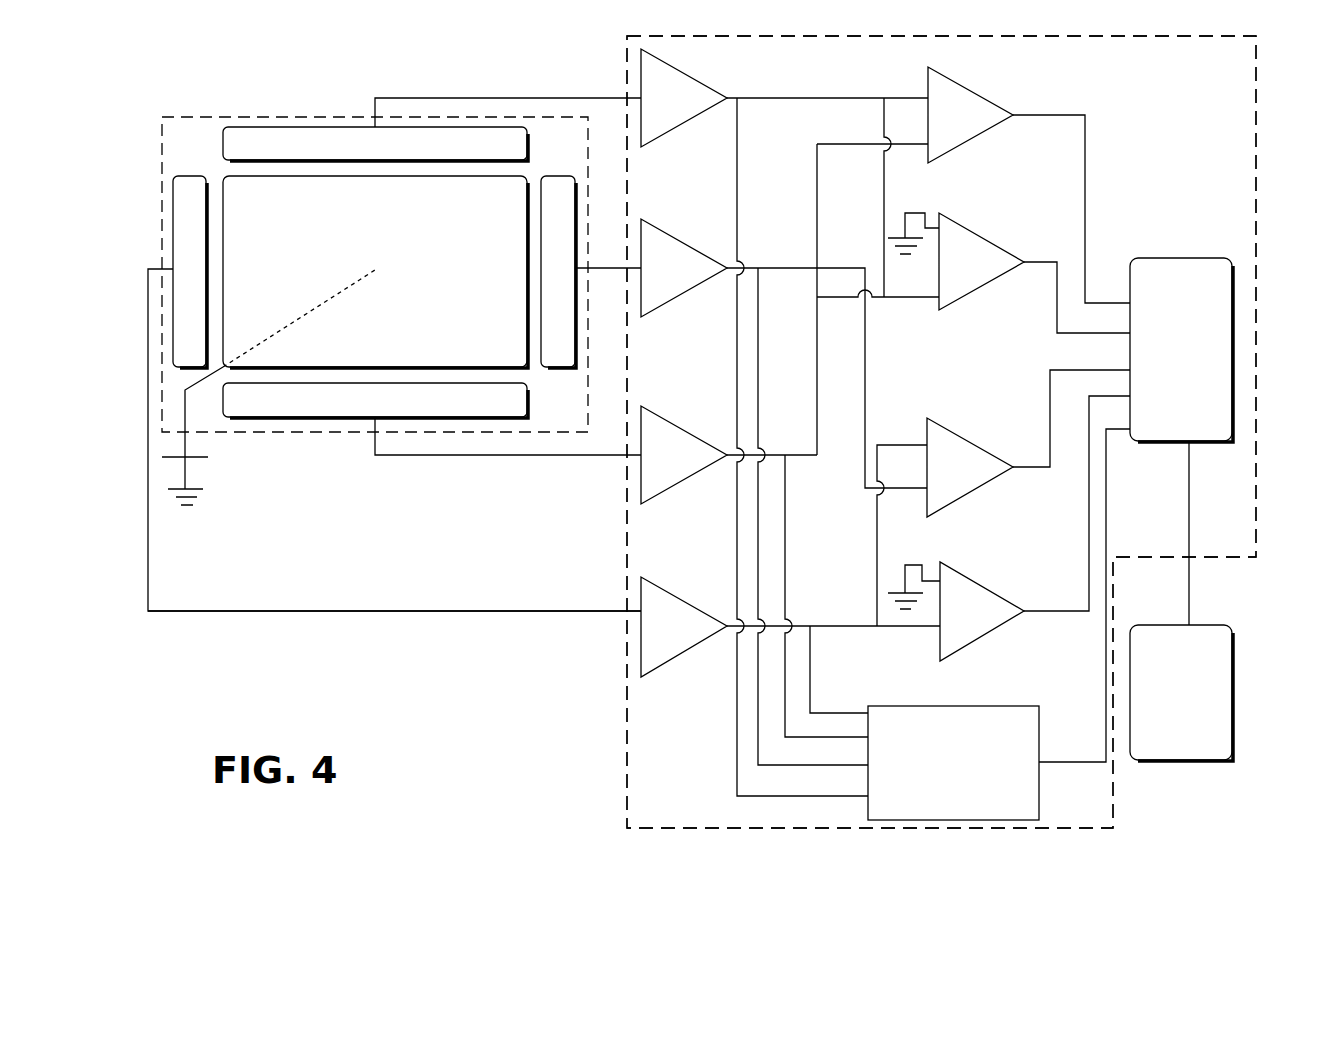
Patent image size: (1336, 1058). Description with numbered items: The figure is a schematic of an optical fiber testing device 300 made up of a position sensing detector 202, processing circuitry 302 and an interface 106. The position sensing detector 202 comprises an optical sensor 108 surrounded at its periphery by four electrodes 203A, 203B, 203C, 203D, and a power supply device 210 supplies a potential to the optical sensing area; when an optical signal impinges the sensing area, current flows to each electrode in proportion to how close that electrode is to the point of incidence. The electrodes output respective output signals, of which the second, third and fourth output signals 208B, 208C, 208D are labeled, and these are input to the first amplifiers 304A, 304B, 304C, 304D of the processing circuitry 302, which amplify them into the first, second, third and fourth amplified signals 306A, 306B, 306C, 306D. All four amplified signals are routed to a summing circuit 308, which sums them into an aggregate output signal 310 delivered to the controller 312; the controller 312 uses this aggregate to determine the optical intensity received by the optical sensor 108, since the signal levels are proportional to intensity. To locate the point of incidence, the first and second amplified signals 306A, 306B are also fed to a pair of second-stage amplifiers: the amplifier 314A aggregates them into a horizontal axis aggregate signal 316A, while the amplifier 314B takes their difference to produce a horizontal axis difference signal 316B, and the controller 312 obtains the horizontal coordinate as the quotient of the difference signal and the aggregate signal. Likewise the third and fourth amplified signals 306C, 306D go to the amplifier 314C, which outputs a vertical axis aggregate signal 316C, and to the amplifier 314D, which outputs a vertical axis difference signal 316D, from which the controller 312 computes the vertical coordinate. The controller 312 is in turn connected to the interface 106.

The interface 106 is at (1180, 762).
The optical sensor 108 is at (223, 175).
The position sensing detector 202 is at (290, 432).
The first electrode 203A is at (575, 367).
The second electrode 203B is at (190, 176).
The third electrode 203C is at (527, 138).
The fourth electrode 203D is at (527, 395).
The second output signal 208B is at (410, 611).
The third output signal 208C is at (537, 98).
The fourth output signal 208D is at (497, 455).
The power supply device 210 is at (208, 457).
The optical fiber testing device 300 is at (462, 78).
The processing circuitry 302 is at (612, 716).
The first amplifier 304A is at (660, 307).
The first amplifier 304B is at (657, 667).
The first amplifier 304C is at (664, 134).
The first amplifier 304D is at (657, 494).
The first amplified signal 306A is at (777, 270).
The second amplified signal 306B is at (818, 627).
The third amplified signal 306C is at (767, 100).
The fourth amplified signal 306D is at (790, 455).
The summing circuit 308 is at (1040, 787).
The aggregate output signal 310 is at (1106, 487).
The controller 312 is at (1205, 444).
The first amplifier of second amplifiers 314A is at (972, 643).
The second amplifier of second amplifiers 314B is at (972, 500).
The third amplifier of second amplifiers 314C is at (975, 295).
The fourth amplifier of second amplifiers 314D is at (978, 142).
The horizontal axis aggregate signal 316A is at (1038, 612).
The horizontal axis difference signal 316B is at (1020, 470).
The vertical axis aggregate signal 316C is at (1056, 334).
The vertical axis difference signal 316D is at (1086, 176).